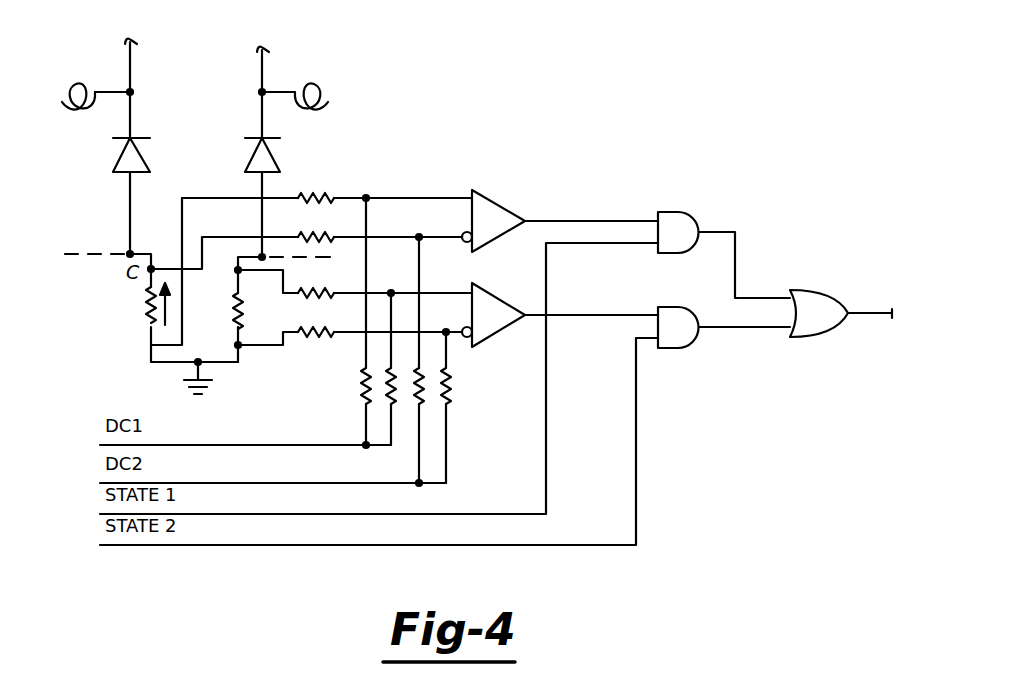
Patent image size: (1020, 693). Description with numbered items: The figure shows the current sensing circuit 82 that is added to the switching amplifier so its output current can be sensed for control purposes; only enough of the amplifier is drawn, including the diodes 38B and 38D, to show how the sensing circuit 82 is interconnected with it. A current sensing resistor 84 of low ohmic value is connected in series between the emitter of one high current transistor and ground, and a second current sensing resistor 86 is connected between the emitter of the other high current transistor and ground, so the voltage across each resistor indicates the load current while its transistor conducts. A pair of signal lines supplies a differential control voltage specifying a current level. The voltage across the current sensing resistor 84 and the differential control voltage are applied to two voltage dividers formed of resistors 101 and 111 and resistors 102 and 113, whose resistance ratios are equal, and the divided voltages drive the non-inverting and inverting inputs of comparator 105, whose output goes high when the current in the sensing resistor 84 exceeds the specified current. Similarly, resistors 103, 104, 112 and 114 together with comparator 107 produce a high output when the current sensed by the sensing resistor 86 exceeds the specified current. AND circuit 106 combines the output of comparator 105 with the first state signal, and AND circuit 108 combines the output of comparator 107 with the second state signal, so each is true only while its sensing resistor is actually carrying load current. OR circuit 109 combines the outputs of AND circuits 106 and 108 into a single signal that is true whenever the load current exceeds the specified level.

The diode 38B is at (150, 156).
The diode 38D is at (282, 157).
The current sensing circuit 82 is at (582, 171).
The current sensing resistor 84 is at (148, 311).
The current sensing resistor 86 is at (241, 320).
The resistor 101 is at (330, 193).
The resistor 102 is at (316, 230).
The resistor 103 is at (346, 279).
The resistor 104 is at (308, 338).
The comparator 105 is at (494, 203).
The AND circuit 106 is at (684, 212).
The comparator 107 is at (524, 282).
The AND circuit 108 is at (703, 306).
The OR circuit 109 is at (838, 278).
The resistor 111 is at (362, 378).
The resistor 112 is at (388, 396).
The resistor 113 is at (421, 400).
The resistor 114 is at (449, 384).